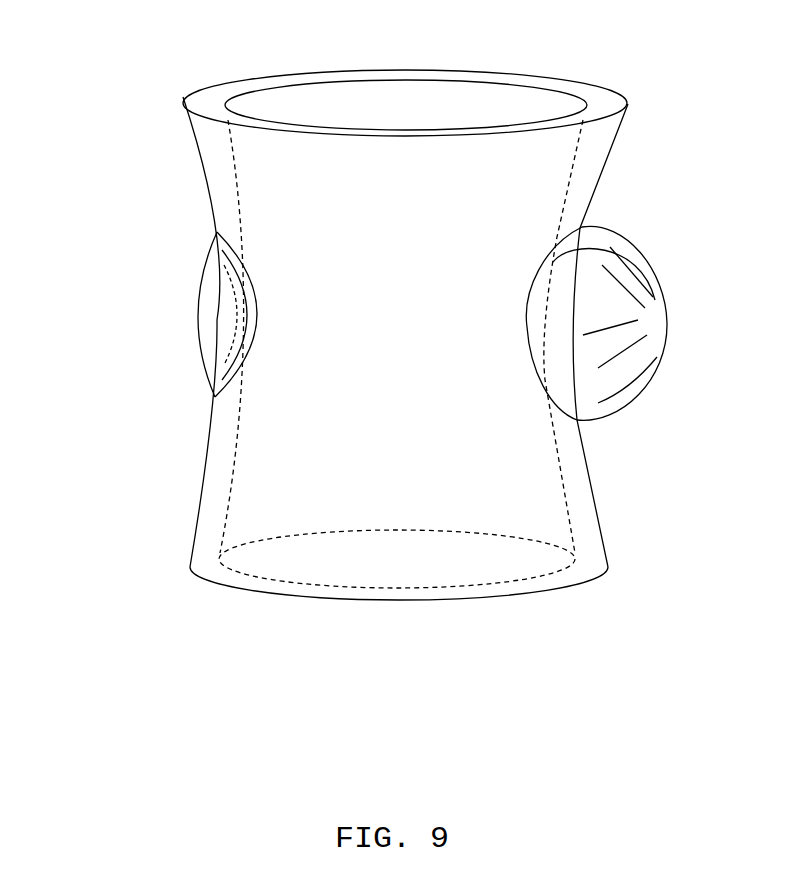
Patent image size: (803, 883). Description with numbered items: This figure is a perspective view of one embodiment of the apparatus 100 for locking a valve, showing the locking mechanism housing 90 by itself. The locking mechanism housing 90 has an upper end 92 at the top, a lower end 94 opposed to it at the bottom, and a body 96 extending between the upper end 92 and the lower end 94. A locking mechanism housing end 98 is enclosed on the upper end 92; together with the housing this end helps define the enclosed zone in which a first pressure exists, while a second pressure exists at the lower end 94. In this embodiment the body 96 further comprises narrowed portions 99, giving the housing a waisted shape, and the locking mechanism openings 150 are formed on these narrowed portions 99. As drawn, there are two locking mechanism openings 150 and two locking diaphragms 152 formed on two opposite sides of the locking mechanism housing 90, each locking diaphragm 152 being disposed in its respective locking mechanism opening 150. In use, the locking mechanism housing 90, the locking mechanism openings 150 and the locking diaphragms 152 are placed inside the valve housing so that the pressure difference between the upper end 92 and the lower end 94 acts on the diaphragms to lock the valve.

The apparatus 100 is at (610, 62).
The locking mechanism housing 90 is at (145, 140).
The upper end 92 is at (202, 105).
The lower end 94 is at (227, 583).
The body 96 is at (210, 163).
The locking mechanism housing end 98 is at (583, 452).
The narrowed portion 99 is at (215, 405).
The locking mechanism opening 150 is at (217, 232).
The locking diaphragm 152 is at (200, 315).